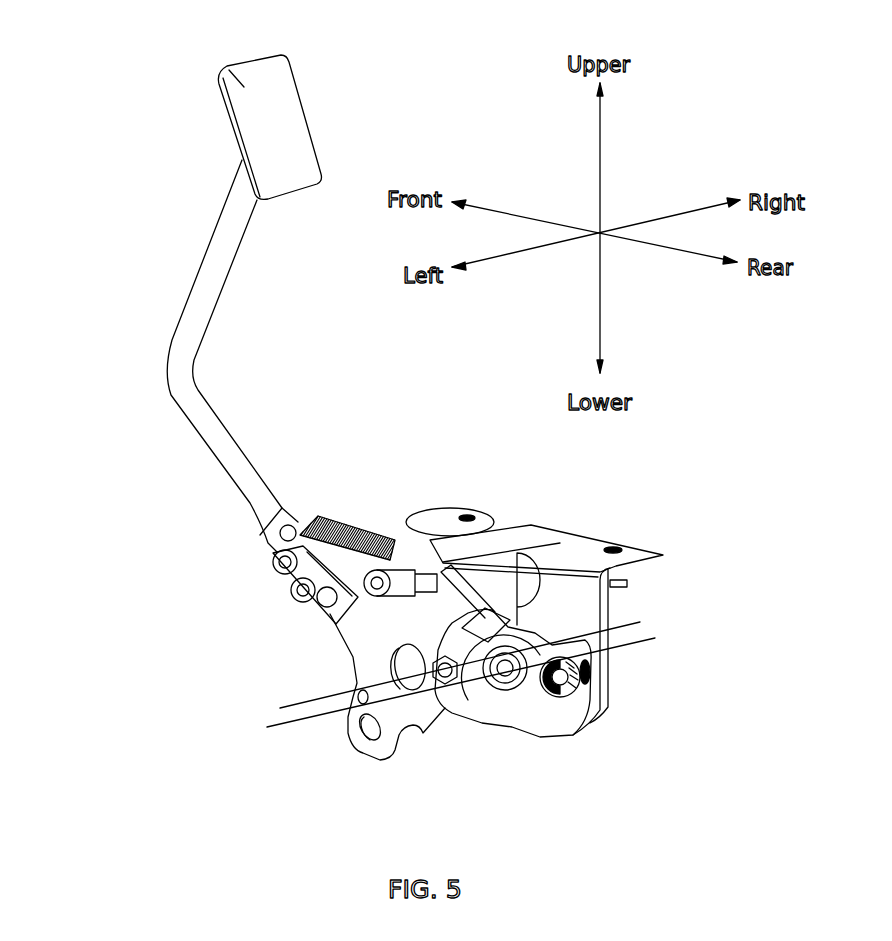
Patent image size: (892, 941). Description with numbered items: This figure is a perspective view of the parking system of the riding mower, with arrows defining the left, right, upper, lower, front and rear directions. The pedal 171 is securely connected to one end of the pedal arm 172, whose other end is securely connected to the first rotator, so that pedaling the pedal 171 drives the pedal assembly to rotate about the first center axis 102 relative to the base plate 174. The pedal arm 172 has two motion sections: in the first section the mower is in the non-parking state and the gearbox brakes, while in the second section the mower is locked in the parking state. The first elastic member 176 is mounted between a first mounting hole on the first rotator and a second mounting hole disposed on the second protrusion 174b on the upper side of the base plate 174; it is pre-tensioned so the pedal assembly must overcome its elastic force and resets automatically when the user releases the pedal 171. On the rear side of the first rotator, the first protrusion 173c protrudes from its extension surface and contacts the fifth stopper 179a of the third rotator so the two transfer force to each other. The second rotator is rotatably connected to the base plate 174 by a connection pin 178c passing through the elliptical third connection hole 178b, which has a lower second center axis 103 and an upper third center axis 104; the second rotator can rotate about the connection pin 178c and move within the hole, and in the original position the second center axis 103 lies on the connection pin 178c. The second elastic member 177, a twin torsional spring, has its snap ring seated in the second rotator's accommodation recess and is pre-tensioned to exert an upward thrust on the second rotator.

The pedal 171 is at (244, 87).
The pedal arm 172 is at (183, 370).
The first elastic member 176 is at (350, 520).
The first center axis 102 is at (298, 600).
The third center axis 104 is at (280, 708).
The base plate 174 is at (595, 601).
The second protrusion 174b is at (527, 523).
The first protrusion 173c is at (453, 550).
The second center axis 103 is at (645, 638).
The second elastic member 177 is at (560, 719).
The third connection hole 178b is at (537, 737).
The connection pin 178c is at (503, 717).
The fifth stopper 179a is at (440, 715).